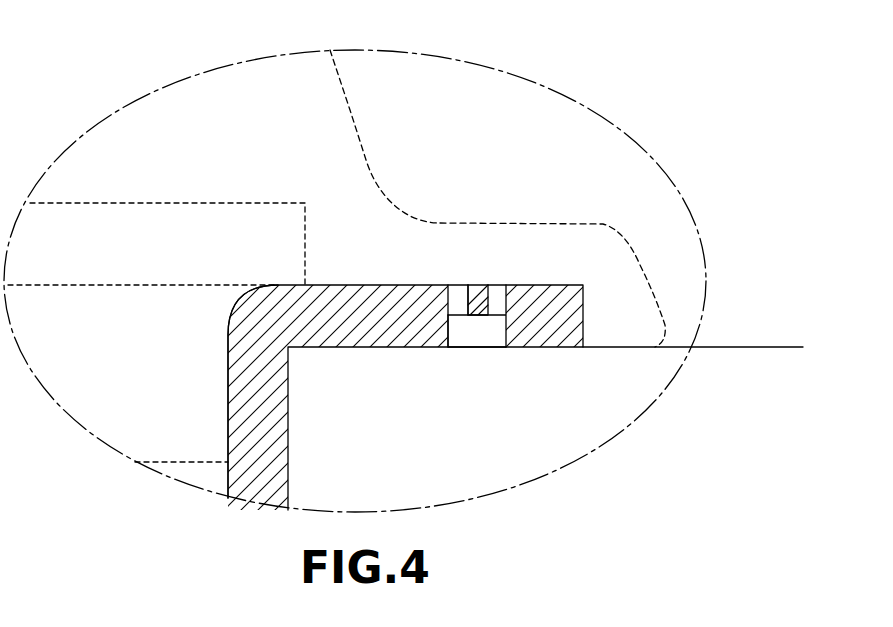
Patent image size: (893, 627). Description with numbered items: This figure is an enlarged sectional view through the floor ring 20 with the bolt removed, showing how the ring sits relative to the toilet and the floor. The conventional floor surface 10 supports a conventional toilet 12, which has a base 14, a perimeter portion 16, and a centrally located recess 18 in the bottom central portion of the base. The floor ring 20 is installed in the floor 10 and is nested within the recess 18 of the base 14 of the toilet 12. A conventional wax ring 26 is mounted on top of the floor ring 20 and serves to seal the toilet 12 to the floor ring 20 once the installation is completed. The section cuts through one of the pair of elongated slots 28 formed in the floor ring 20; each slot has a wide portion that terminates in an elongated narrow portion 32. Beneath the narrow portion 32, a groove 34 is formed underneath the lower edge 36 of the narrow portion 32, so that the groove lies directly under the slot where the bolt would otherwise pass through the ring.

The floor surface 10 is at (740, 347).
The toilet 12 is at (352, 104).
The base 14 is at (603, 223).
The perimeter portion 16 is at (646, 273).
The recess 18 is at (345, 287).
The floor ring 20 is at (224, 328).
The wax ring 26 is at (213, 203).
The elongated slot 28 is at (456, 286).
The narrow portion 32 is at (484, 305).
The groove 34 is at (491, 326).
The lower edge 36 is at (462, 318).